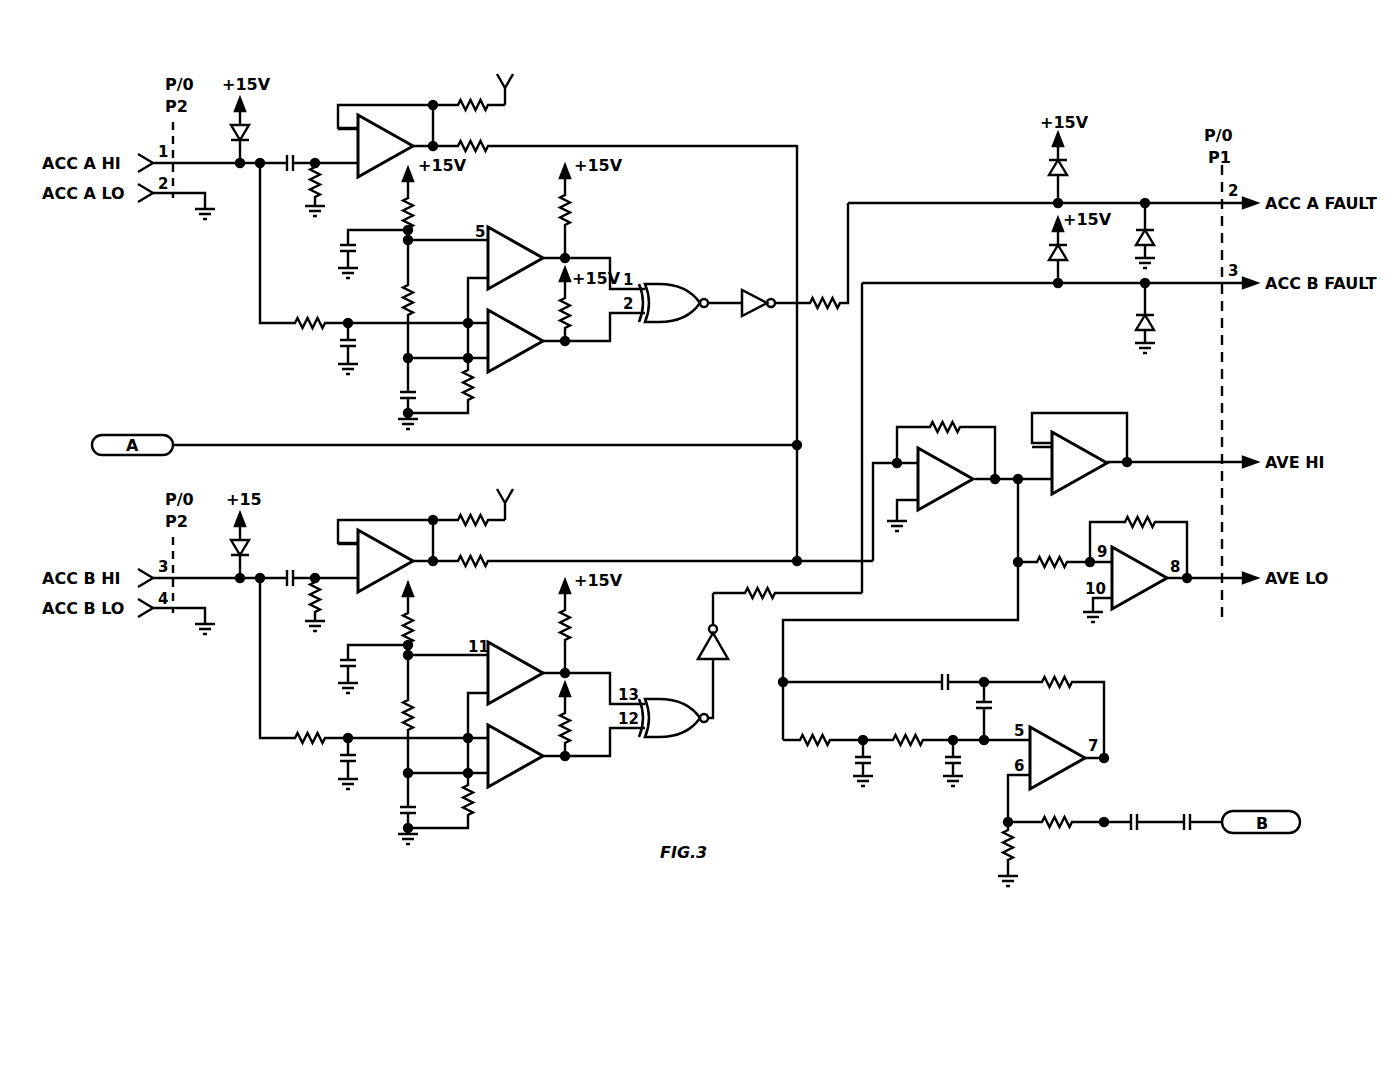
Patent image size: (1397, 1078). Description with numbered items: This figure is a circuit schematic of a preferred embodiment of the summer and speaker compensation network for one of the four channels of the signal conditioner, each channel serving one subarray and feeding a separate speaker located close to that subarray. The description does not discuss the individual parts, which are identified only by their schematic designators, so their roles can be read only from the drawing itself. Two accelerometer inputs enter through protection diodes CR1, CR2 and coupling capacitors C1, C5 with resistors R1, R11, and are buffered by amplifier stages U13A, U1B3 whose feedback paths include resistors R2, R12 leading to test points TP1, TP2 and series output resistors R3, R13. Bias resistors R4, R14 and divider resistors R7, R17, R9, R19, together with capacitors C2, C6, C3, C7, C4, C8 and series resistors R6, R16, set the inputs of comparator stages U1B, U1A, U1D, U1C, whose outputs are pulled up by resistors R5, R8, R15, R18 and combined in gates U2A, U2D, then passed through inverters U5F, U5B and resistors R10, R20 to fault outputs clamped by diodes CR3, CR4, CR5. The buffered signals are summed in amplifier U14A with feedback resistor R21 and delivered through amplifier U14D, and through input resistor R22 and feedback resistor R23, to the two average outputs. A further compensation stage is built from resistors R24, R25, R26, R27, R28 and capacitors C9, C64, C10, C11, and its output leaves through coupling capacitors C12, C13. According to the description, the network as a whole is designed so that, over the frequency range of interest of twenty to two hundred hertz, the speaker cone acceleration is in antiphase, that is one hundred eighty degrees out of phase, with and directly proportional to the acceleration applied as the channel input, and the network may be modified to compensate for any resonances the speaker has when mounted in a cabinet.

The protection diode, channel A CR1 is at (260, 130).
The input coupling capacitor, channel A C1 is at (293, 154).
The input bias resistor, channel A R1 is at (325, 190).
The input buffer amplifier, channel A U13A is at (389, 128).
The test point resistor R2 is at (469, 95).
The test point 1 TP1 is at (509, 80).
The output series resistor, channel A R3 is at (605, 136).
The window comparator bias resistor R4 is at (422, 199).
The comparator pull-up resistor R5 is at (578, 211).
The filter capacitor C2 is at (373, 254).
The window comparator, upper U1B is at (516, 247).
The window divider resistor R7 is at (421, 300).
The signal series resistor R6 is at (374, 245).
The filter capacitor C3 is at (359, 348).
The window comparator, lower U1A is at (516, 332).
The comparator pull-up resistor R8 is at (578, 304).
The exclusive NOR gate U2A is at (680, 292).
The inverter U5F is at (758, 289).
The fault output resistor, channel A R10 is at (811, 270).
The divider filter capacitor C4 is at (419, 407).
The window divider resistor R9 is at (454, 385).
The clamp diode, ACC A FAULT CR3 is at (1077, 168).
The clamp diode, ACC B FAULT CR4 is at (1077, 250).
The clamp diode to ground CR5 is at (1165, 235).
The protection diode, channel B CR2 is at (260, 545).
The input coupling capacitor, channel B C5 is at (293, 569).
The input bias resistor, channel B R11 is at (331, 605).
The input buffer amplifier, channel B U1B3 is at (386, 536).
The test point resistor R12 is at (469, 510).
The test point 2 TP2 is at (509, 495).
The output series resistor, channel B R13 is at (643, 551).
The window comparator bias resistor R14 is at (428, 614).
The comparator pull-up resistor R15 is at (584, 626).
The filter capacitor C6 is at (373, 669).
The window comparator, upper, channel B U1D is at (517, 662).
The window divider resistor R17 is at (427, 715).
The signal series resistor R16 is at (374, 660).
The filter capacitor C7 is at (359, 763).
The window comparator, lower, channel B U1C is at (521, 747).
The comparator pull-up resistor R18 is at (584, 719).
The divider filter capacitor C8 is at (419, 822).
The window divider resistor R19 is at (460, 800).
The exclusive NOR gate, channel B U2D is at (680, 707).
The inverter, channel B U5B is at (729, 626).
The fault output resistor, channel B R20 is at (787, 582).
The summing amplifier feedback resistor R21 is at (946, 441).
The summing amplifier U14A is at (938, 486).
The average high output amplifier U14D is at (1078, 453).
The inverting amplifier input resistor R22 is at (1065, 552).
The inverting amplifier feedback resistor R23 is at (1138, 538).
The filter feedback capacitor C9 is at (883, 670).
The filter feedback resistor R26 is at (1044, 707).
The filter capacitor C64 is at (1002, 711).
The filter input resistor R24 is at (823, 729).
The filter series resistor R25 is at (946, 729).
The filter shunt capacitor C10 is at (881, 763).
The filter shunt capacitor C11 is at (971, 763).
The gain setting resistor R27 is at (1069, 812).
The gain setting resistor to ground R28 is at (1025, 854).
The output coupling capacitor C12 is at (1155, 808).
The output coupling capacitor C13 is at (1200, 808).